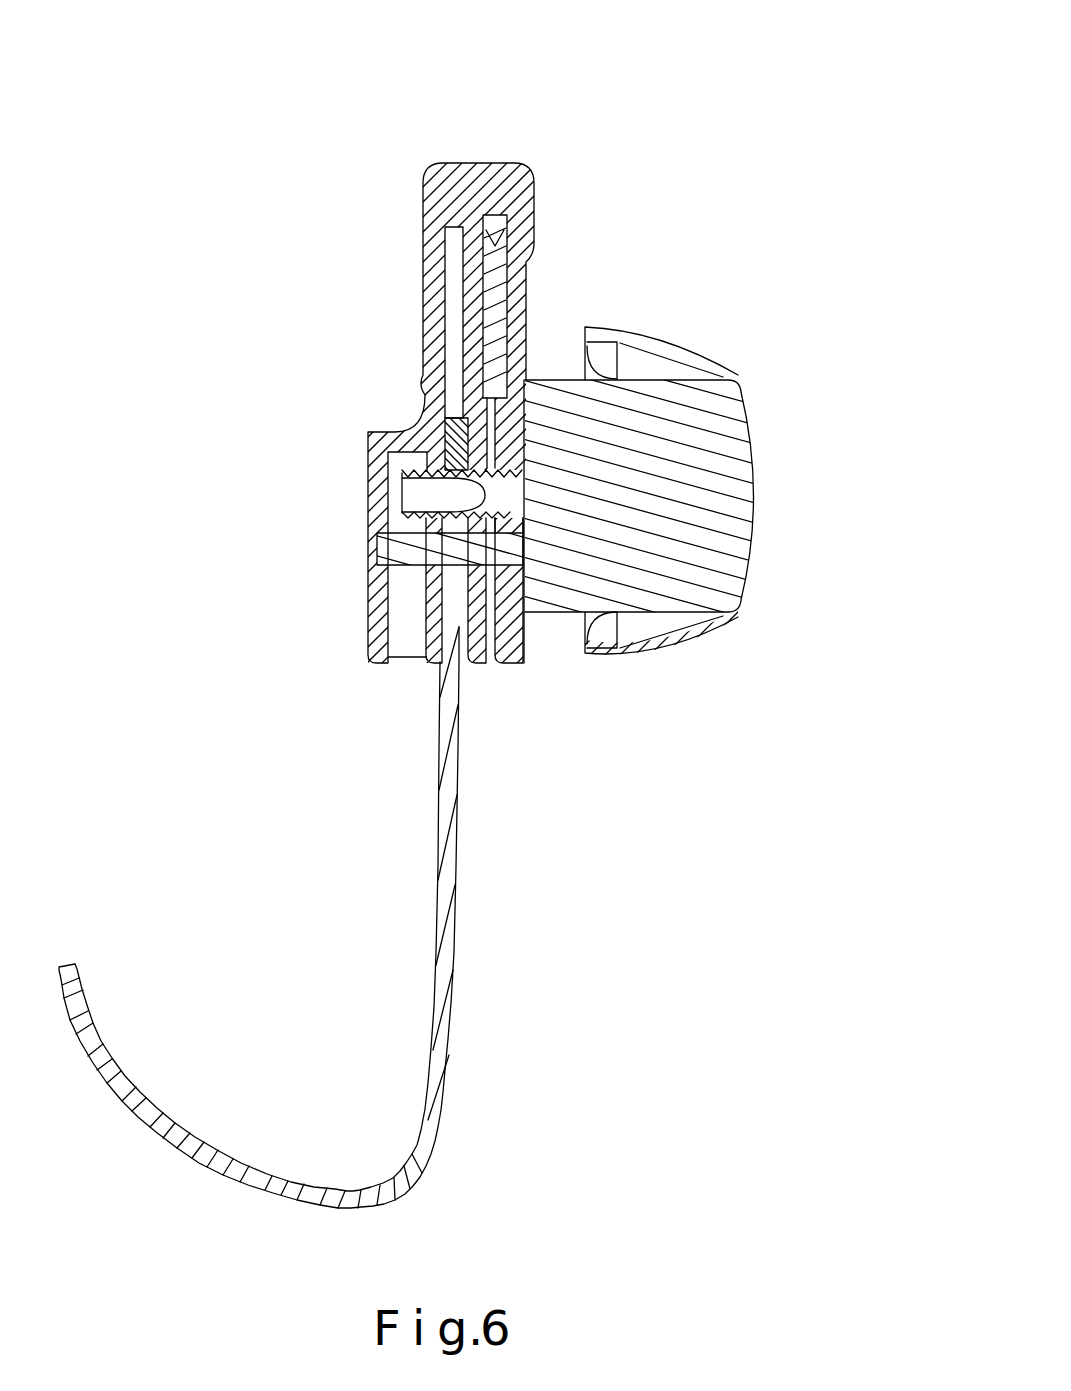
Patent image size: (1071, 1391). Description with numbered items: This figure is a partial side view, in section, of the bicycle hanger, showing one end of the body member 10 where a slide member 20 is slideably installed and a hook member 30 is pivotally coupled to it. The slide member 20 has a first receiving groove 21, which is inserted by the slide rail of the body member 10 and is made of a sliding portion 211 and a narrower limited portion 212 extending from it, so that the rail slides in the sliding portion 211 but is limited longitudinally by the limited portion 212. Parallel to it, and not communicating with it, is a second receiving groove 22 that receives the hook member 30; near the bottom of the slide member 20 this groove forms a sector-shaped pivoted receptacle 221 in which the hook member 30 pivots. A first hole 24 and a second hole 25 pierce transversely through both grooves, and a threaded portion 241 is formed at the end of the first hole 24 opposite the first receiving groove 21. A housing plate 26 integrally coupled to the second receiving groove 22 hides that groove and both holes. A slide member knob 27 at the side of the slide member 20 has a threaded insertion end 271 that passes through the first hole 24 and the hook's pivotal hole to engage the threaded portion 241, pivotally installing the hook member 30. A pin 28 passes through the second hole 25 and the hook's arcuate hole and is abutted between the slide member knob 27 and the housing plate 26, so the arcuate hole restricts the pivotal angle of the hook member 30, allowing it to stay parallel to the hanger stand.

The body member 10 is at (480, 185).
The slide member 20 is at (552, 100).
The first receiving groove 21 is at (657, 187).
The sliding portion 211 is at (490, 233).
The limited portion 212 is at (522, 348).
The second receiving groove 22 is at (453, 261).
The pivoted receptacle 221 is at (470, 613).
The first hole 24 is at (453, 500).
The threaded portion 241 is at (405, 473).
The second hole 25 is at (453, 553).
The housing plate 26 is at (365, 622).
The slide member knob 27 is at (708, 520).
The threaded insertion end 271 is at (485, 498).
The pin 28 is at (498, 552).
The hook member 30 is at (470, 1120).